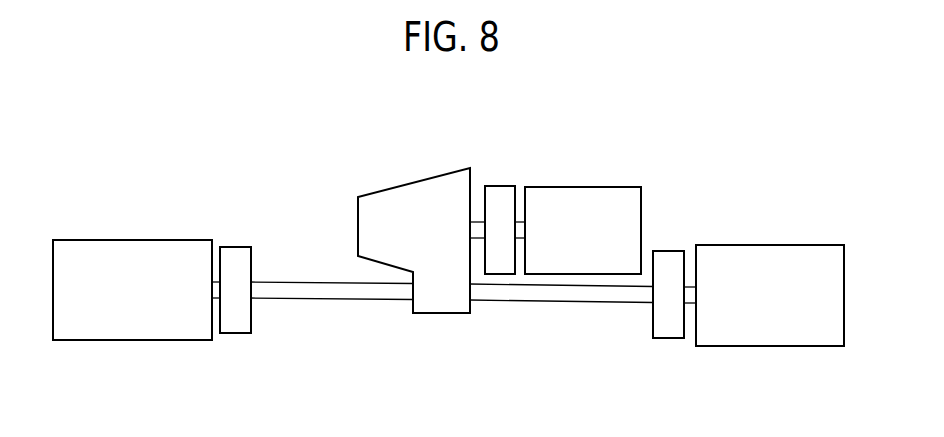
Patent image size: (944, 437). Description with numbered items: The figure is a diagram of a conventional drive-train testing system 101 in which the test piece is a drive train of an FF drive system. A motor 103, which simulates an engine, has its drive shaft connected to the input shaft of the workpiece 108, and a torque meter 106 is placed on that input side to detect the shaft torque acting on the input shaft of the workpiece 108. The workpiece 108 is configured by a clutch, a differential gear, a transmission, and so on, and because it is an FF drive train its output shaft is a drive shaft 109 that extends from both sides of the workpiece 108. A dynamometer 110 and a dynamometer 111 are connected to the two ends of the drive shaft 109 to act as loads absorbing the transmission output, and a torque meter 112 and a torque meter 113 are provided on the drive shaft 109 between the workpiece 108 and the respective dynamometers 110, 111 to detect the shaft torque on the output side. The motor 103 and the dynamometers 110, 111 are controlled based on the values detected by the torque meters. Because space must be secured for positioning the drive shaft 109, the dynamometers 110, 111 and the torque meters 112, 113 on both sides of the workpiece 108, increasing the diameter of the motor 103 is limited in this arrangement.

The testing system 101 is at (215, 146).
The motor 103 is at (597, 187).
The torque meter 106 is at (500, 186).
The workpiece 108 is at (406, 185).
The drive shaft 109 is at (297, 281).
The dynamometer 110 is at (170, 239).
The dynamometer 111 is at (807, 245).
The torque meter 112 is at (238, 246).
The torque meter 113 is at (670, 251).